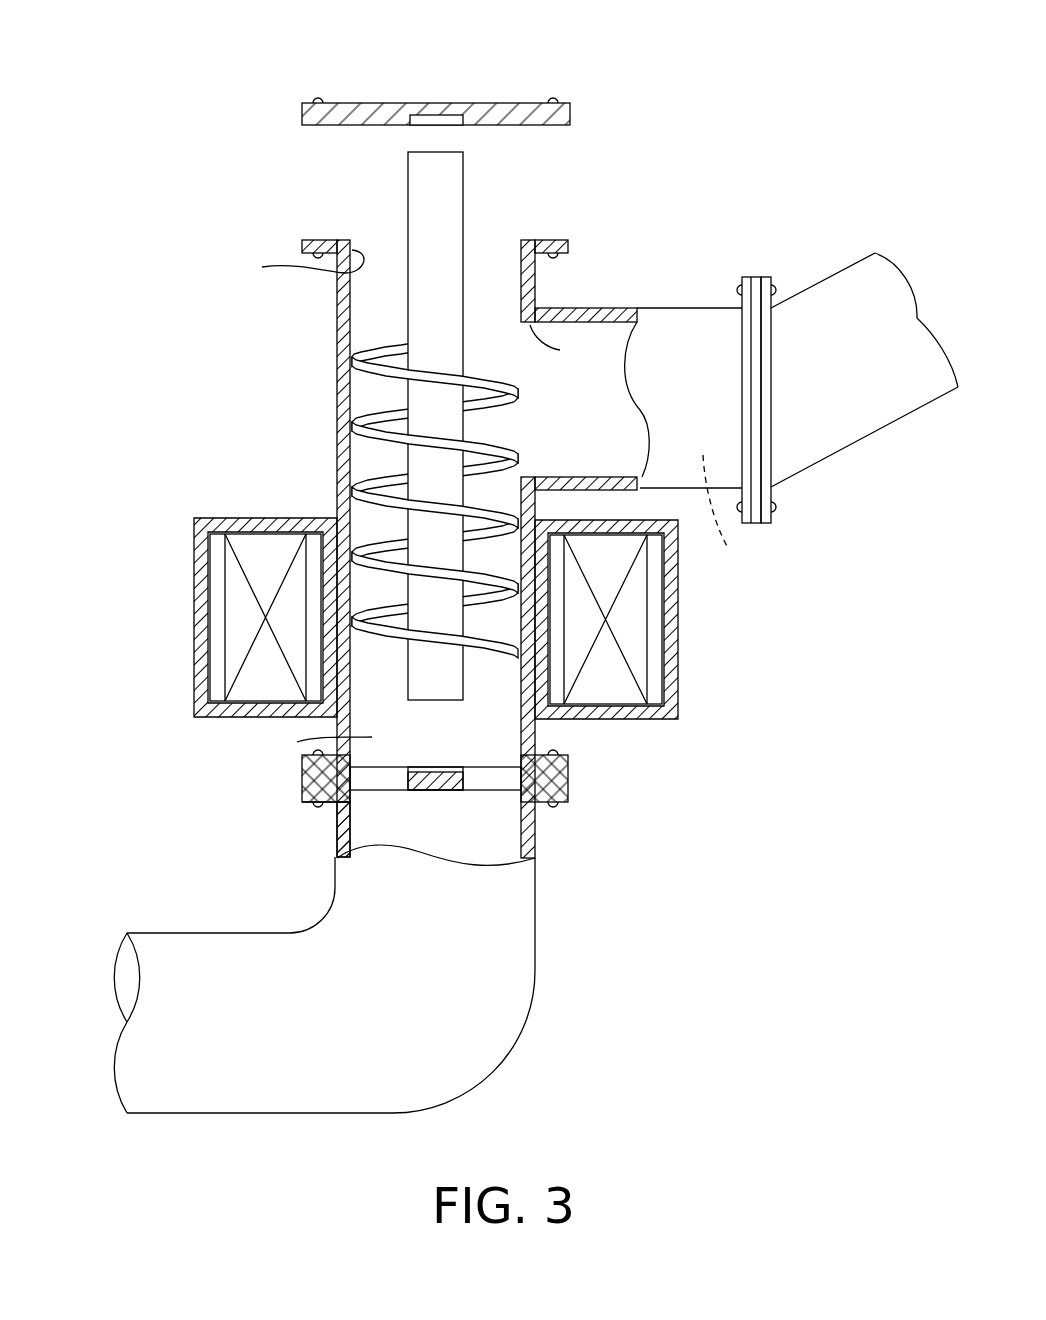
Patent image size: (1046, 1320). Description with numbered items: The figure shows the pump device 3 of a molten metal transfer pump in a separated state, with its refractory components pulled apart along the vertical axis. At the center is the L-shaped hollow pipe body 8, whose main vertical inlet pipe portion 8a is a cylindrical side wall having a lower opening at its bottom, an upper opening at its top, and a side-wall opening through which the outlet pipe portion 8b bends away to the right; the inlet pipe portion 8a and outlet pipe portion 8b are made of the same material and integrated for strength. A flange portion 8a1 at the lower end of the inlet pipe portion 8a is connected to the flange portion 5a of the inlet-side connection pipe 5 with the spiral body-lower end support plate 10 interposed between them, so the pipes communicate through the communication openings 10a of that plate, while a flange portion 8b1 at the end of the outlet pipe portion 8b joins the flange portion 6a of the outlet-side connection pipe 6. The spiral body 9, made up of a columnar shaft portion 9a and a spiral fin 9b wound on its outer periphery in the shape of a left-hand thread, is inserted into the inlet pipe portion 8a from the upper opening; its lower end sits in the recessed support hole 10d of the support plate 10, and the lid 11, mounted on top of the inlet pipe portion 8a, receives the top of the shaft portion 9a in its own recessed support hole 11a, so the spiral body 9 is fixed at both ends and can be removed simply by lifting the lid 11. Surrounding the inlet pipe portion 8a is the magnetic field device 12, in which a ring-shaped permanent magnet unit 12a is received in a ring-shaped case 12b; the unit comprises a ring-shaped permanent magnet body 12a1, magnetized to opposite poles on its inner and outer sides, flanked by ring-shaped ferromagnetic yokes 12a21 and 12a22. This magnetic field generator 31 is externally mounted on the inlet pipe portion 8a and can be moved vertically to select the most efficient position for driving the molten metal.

The pump device 3 is at (720, 62).
The inlet-side connection pipe 5 is at (483, 1032).
The flange portion 5a is at (320, 803).
The outlet-side connection pipe 6 is at (832, 292).
The flange portion 6a is at (762, 277).
The pipe body 8 is at (326, 316).
The inlet pipe portion 8a is at (348, 360).
The flange portion 8a1 is at (302, 758).
The outlet pipe portion 8b is at (585, 307).
The flange portion 8b1 is at (750, 280).
The spiral body 9 is at (402, 268).
The shaft portion 9a is at (452, 341).
The spiral fin 9b is at (490, 445).
The spiral body-lower end support plate 10 is at (573, 778).
The communication openings 10a is at (386, 780).
The support hole 10d is at (433, 770).
The lid 11 is at (502, 98).
The support hole 11a is at (438, 120).
The magnetic field device 12 is at (197, 508).
The permanent magnet unit 12a is at (205, 577).
The permanent magnet body 12a1 is at (237, 612).
The yoke 12a21 is at (215, 652).
The yoke 12a22 is at (314, 540).
The case 12b is at (246, 515).
The magnetic field generator 31 is at (133, 538).